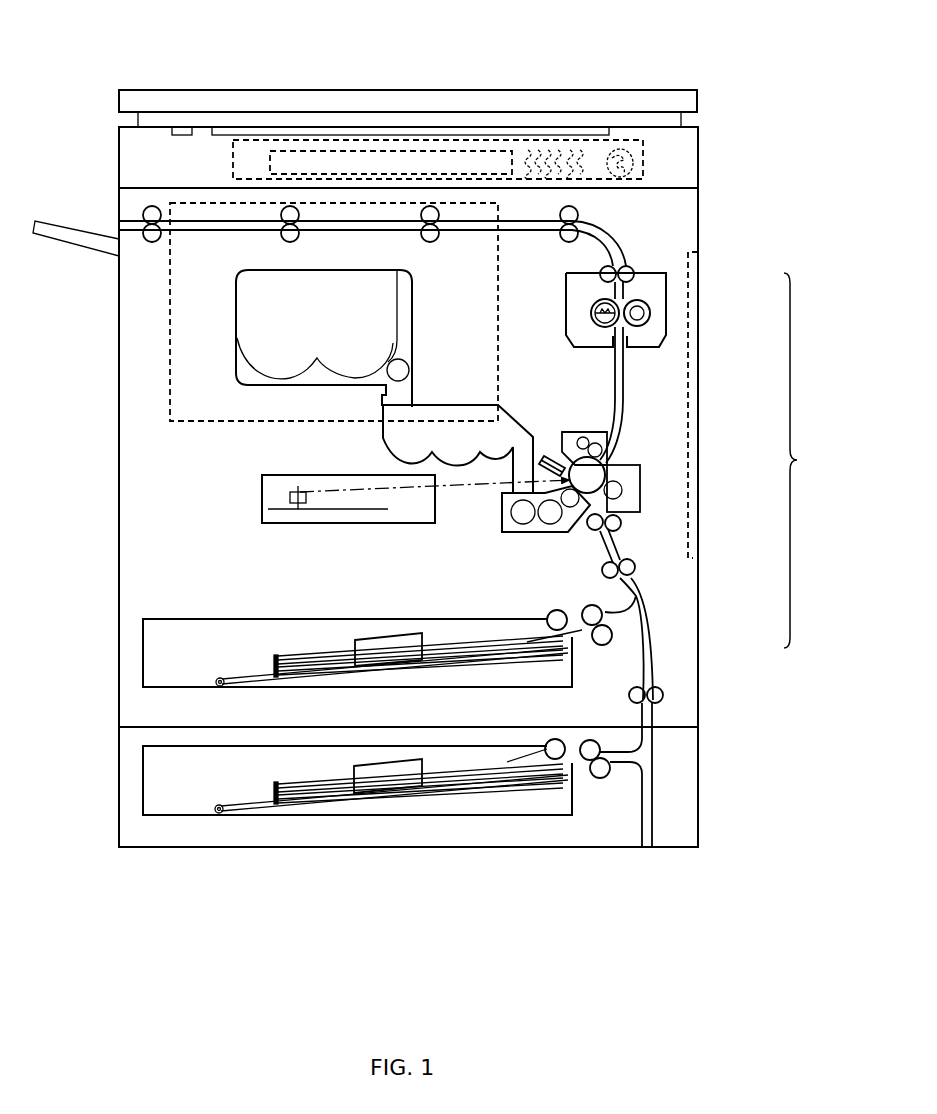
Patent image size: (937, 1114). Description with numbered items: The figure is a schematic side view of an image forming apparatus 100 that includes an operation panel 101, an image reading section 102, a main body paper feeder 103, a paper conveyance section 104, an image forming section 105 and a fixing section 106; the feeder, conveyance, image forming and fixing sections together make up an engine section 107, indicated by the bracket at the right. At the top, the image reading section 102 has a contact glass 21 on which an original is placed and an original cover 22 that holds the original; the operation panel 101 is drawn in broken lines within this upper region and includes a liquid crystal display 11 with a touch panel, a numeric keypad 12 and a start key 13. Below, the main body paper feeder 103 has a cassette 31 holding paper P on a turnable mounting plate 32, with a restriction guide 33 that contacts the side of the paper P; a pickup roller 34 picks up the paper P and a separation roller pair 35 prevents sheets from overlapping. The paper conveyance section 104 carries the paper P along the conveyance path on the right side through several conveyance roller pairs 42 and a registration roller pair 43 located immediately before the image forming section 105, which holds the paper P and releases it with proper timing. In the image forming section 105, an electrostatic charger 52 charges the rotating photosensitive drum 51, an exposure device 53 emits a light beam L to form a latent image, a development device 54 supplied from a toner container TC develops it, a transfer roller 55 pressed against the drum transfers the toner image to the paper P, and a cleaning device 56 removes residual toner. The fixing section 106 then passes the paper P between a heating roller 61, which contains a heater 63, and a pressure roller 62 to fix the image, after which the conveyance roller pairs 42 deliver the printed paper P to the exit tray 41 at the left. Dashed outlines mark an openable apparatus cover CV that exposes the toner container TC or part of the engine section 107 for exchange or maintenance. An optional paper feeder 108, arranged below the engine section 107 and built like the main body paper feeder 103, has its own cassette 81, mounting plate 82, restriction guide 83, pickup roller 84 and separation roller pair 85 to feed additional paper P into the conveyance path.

The image forming apparatus 100 is at (118, 78).
The original cover 22 is at (437, 98).
The contact glass 21 is at (533, 127).
The operation panel 101 is at (232, 152).
The liquid crystal display 11 is at (355, 162).
The numeric keypad 12 is at (578, 178).
The start key 13 is at (608, 178).
The image reading section 102 is at (700, 172).
The exit tray 41 is at (86, 235).
The conveyance roller pairs 42 is at (152, 243).
The registration roller pair 43 is at (615, 526).
The paper conveyance section 104 is at (486, 232).
The apparatus cover CV is at (690, 265).
The toner container TC is at (250, 333).
The exposure device 53 is at (262, 497).
The light beam L is at (348, 487).
The electrostatic charger 52 is at (548, 456).
The photosensitive drum 51 is at (572, 458).
The cleaning device 56 is at (590, 440).
The transfer roller 55 is at (640, 470).
The development device 54 is at (502, 520).
The image forming section 105 is at (641, 492).
The fixing section 106 is at (668, 302).
The heating roller 61 is at (591, 313).
The pressure roller 62 is at (642, 326).
The heater 63 is at (600, 302).
The engine section 107 is at (813, 460).
The cassette 31 is at (200, 618).
The restriction guide 33 is at (270, 668).
The paper P is at (276, 658).
The mounting plate 32 is at (425, 670).
The pickup roller 34 is at (556, 620).
The separation roller pair 35 is at (592, 612).
The main body paper feeder 103 is at (576, 667).
The cassette 81 is at (180, 816).
The restriction guide 83 is at (270, 796).
The mounting plate 82 is at (440, 790).
The pickup roller 84 is at (548, 750).
The separation roller pair 85 is at (606, 778).
The paper feeder 108 is at (700, 778).